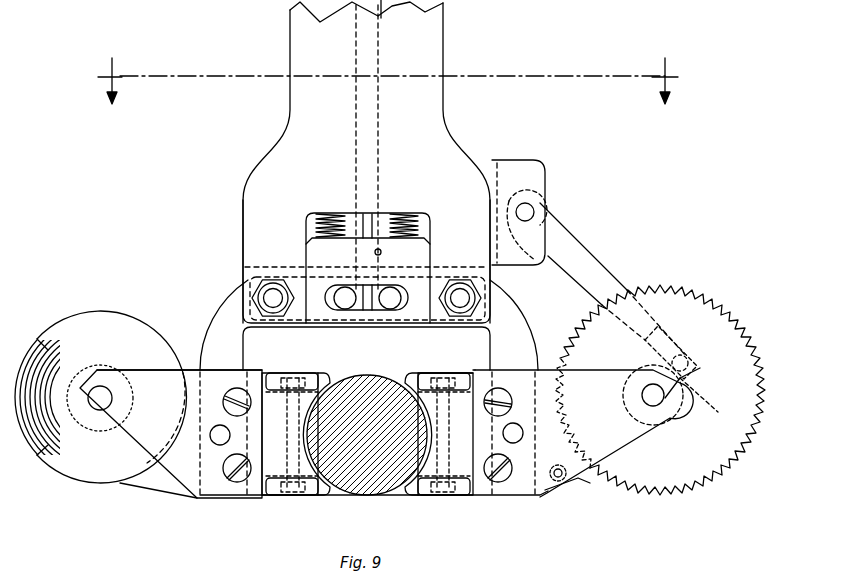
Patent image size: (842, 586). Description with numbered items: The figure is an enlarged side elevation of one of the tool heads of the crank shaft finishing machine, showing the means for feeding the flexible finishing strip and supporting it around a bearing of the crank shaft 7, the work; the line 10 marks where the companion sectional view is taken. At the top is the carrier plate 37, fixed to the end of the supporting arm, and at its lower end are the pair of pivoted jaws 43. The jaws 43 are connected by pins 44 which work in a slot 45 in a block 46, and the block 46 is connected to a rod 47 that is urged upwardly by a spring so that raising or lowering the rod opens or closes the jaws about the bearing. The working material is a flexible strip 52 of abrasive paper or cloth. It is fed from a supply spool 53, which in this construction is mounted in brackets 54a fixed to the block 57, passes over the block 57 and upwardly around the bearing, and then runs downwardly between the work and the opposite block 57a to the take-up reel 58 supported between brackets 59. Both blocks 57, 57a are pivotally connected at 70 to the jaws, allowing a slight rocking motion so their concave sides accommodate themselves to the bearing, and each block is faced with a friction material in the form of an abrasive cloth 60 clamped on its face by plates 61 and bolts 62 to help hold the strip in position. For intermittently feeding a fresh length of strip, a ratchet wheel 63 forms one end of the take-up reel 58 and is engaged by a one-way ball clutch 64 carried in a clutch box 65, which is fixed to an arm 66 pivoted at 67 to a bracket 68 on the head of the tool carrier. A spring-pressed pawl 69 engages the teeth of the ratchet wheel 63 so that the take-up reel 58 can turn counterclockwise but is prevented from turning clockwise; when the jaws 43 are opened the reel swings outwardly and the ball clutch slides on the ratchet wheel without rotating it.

The crank shaft 7 is at (378, 380).
The section line 10— 10 is at (387, 81).
The carrier plate 37 is at (430, 45).
The pivoted jaws 43 is at (222, 314).
The pins 44 is at (392, 306).
The slot 45 is at (370, 312).
The block 46 is at (420, 258).
The rod 47 is at (371, 8).
The strip 52 is at (532, 500).
The supply spool 53 is at (100, 397).
The brackets 54a is at (164, 431).
The block 57 is at (296, 434).
The opposite block 57a is at (439, 434).
The take-up reel 58 is at (672, 420).
The brackets 59 is at (584, 433).
The abrasive cloth 60 is at (300, 406).
The plates 61 is at (316, 376).
The bolts 62 is at (300, 372).
The ratchet wheel 63 is at (660, 390).
The ball clutch 64 is at (688, 358).
The clutch box 65 is at (672, 336).
The arm 66 is at (592, 262).
The pivot 67 is at (534, 212).
The bracket 68 is at (546, 178).
The spring-pressed pawl 69 is at (573, 486).
The pivotal connection 70 is at (218, 437).